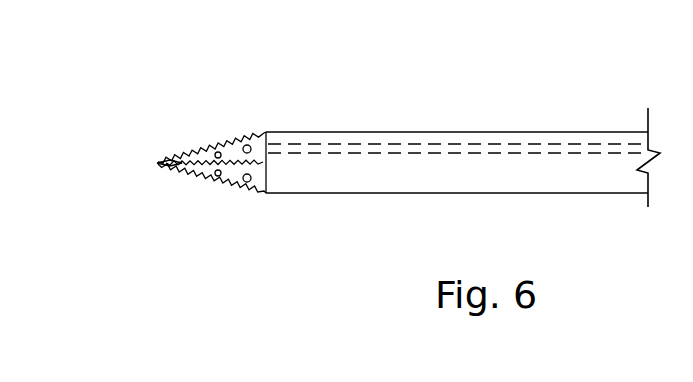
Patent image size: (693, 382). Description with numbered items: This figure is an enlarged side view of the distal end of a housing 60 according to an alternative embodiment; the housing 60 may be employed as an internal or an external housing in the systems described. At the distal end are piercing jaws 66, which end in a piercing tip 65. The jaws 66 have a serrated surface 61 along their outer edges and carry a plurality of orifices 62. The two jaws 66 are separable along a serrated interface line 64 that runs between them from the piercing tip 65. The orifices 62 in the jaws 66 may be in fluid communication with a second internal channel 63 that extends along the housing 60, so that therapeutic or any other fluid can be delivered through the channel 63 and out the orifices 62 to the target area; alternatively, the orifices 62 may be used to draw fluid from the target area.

The housing 60 is at (463, 118).
The serrated surface 61 is at (200, 166).
The orifices 62 is at (258, 135).
The second internal channel 63 is at (412, 145).
The serrated interface line 64 is at (183, 175).
The piercing tip 65 is at (160, 163).
The piercing jaws 66 is at (232, 183).